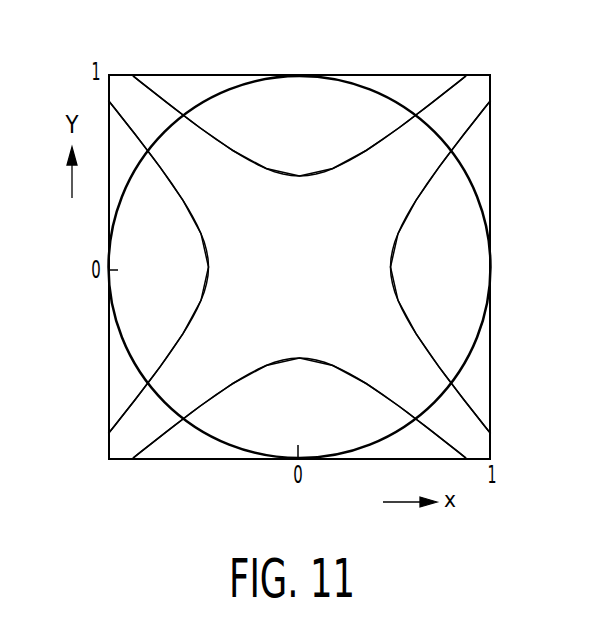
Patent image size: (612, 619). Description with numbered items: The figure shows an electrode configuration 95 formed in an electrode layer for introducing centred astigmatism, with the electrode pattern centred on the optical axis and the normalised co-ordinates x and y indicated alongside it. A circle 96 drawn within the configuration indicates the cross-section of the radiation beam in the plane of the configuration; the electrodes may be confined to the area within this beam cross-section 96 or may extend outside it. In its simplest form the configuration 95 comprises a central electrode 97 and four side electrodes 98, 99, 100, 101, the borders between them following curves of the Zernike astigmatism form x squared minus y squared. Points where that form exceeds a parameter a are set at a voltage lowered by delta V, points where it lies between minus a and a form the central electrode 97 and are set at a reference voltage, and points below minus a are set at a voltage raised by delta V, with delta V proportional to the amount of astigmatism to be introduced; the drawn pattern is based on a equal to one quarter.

The electrode configuration 95 is at (433, 75).
The circle 96 is at (380, 92).
The central electrode 97 is at (428, 143).
The side electrode 98 is at (479, 302).
The side electrode 99 is at (231, 433).
The side electrode 100 is at (118, 301).
The side electrode 101 is at (278, 85).